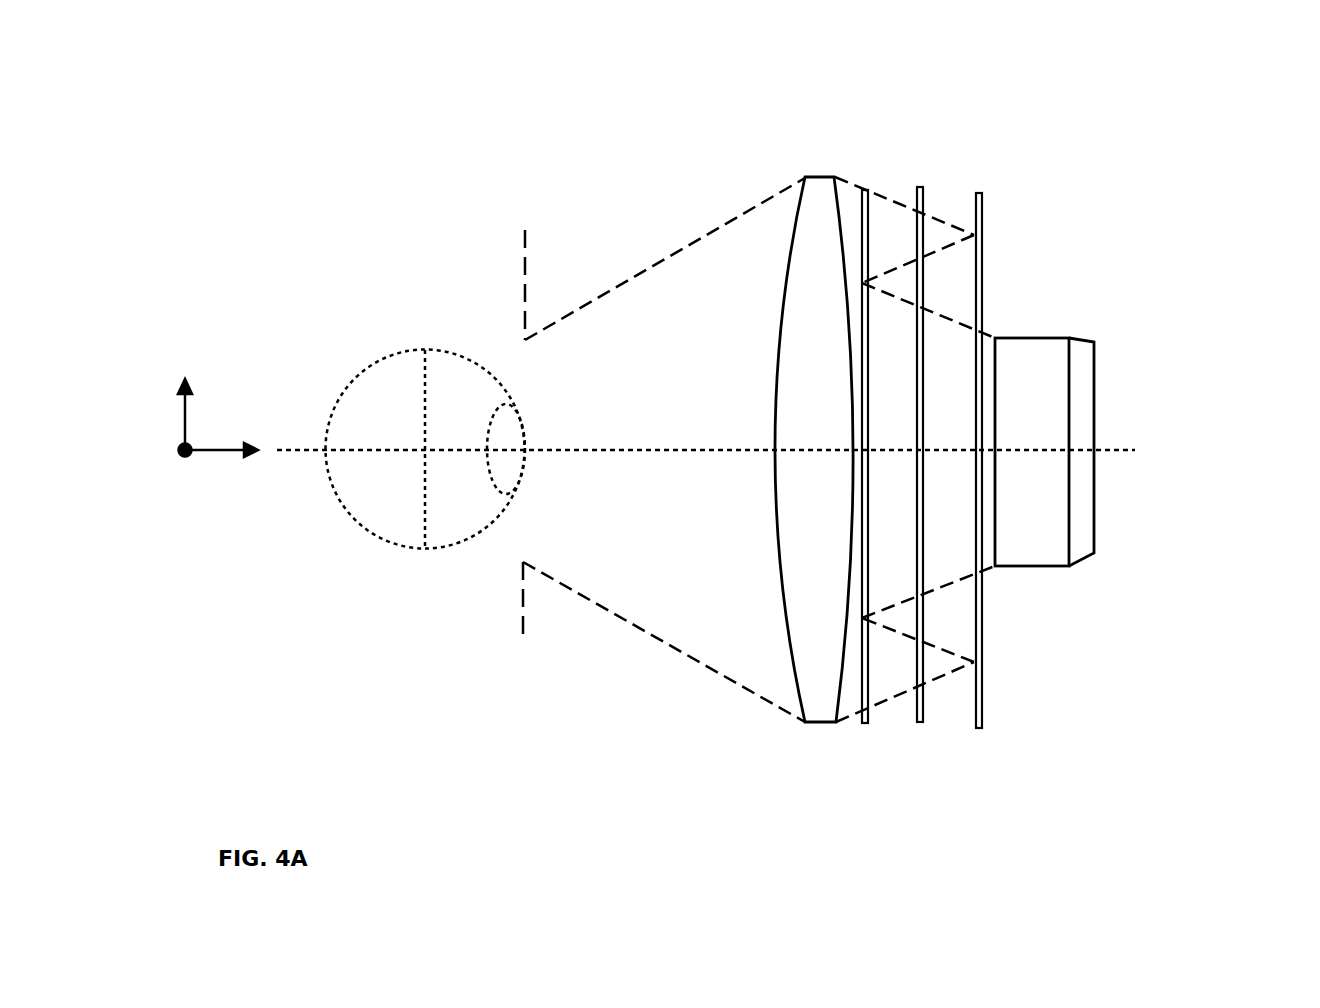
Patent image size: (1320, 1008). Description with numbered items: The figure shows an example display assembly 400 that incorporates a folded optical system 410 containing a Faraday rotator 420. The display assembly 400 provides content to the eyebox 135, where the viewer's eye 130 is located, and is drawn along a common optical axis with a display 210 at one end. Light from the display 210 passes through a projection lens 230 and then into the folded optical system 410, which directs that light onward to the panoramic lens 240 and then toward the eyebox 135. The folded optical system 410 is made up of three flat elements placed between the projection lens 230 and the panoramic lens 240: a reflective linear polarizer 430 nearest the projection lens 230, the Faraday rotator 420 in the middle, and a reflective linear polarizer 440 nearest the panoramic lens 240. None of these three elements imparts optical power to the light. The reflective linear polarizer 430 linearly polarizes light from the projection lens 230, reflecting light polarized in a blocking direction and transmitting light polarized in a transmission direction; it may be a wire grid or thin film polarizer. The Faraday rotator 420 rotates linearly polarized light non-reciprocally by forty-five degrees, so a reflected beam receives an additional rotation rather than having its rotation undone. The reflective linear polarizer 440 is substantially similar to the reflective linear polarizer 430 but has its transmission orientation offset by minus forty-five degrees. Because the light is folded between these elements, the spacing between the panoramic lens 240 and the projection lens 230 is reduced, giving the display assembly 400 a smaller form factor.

The display assembly 400 is at (257, 112).
The eye 130 is at (382, 357).
The eyebox 135 is at (520, 595).
The panoramic lens 240 is at (815, 618).
The folded optical system 410 is at (988, 170).
The reflective linear polarizer 440 is at (866, 190).
The Faraday rotator 420 is at (918, 722).
The reflective linear polarizer 430 is at (978, 192).
The projection lens 230 is at (1055, 533).
The display 210 is at (1088, 353).